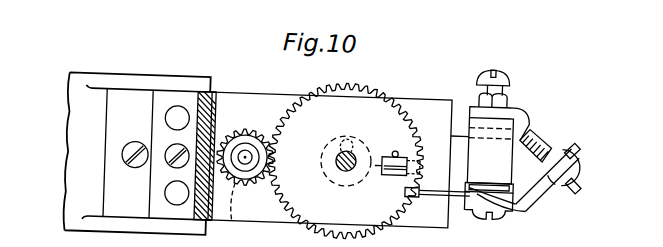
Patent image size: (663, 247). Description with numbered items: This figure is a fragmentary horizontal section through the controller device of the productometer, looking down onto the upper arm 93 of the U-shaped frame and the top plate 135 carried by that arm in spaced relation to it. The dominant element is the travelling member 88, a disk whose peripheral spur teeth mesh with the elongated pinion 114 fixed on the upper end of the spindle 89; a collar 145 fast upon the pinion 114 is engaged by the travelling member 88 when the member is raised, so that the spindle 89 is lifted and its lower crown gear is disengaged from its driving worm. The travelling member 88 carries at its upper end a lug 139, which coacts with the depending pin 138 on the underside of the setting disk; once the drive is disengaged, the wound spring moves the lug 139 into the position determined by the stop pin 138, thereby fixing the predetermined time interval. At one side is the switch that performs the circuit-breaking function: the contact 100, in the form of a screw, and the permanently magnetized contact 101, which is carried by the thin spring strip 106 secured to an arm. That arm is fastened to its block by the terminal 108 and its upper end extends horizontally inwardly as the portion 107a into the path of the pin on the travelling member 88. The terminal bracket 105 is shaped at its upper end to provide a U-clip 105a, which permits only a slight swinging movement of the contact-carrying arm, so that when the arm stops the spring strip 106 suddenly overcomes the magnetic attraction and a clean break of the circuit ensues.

The travelling member 88 is at (360, 102).
The spindle 89 is at (247, 153).
The upper arm of the frame 93 is at (437, 111).
The contact 100 is at (503, 78).
The contact 101 is at (529, 187).
The terminal bracket 105 is at (546, 136).
The U-clip 105a is at (523, 107).
The spring strip 106 is at (520, 205).
The horizontally inwardly extending portion of the arm 107a is at (456, 194).
The terminal 108 is at (586, 150).
The elongated pinion 114 is at (246, 212).
The top plate 135 is at (220, 104).
The depending pin 138 is at (397, 149).
The lug 139 is at (397, 174).
The collar 145 is at (245, 150).